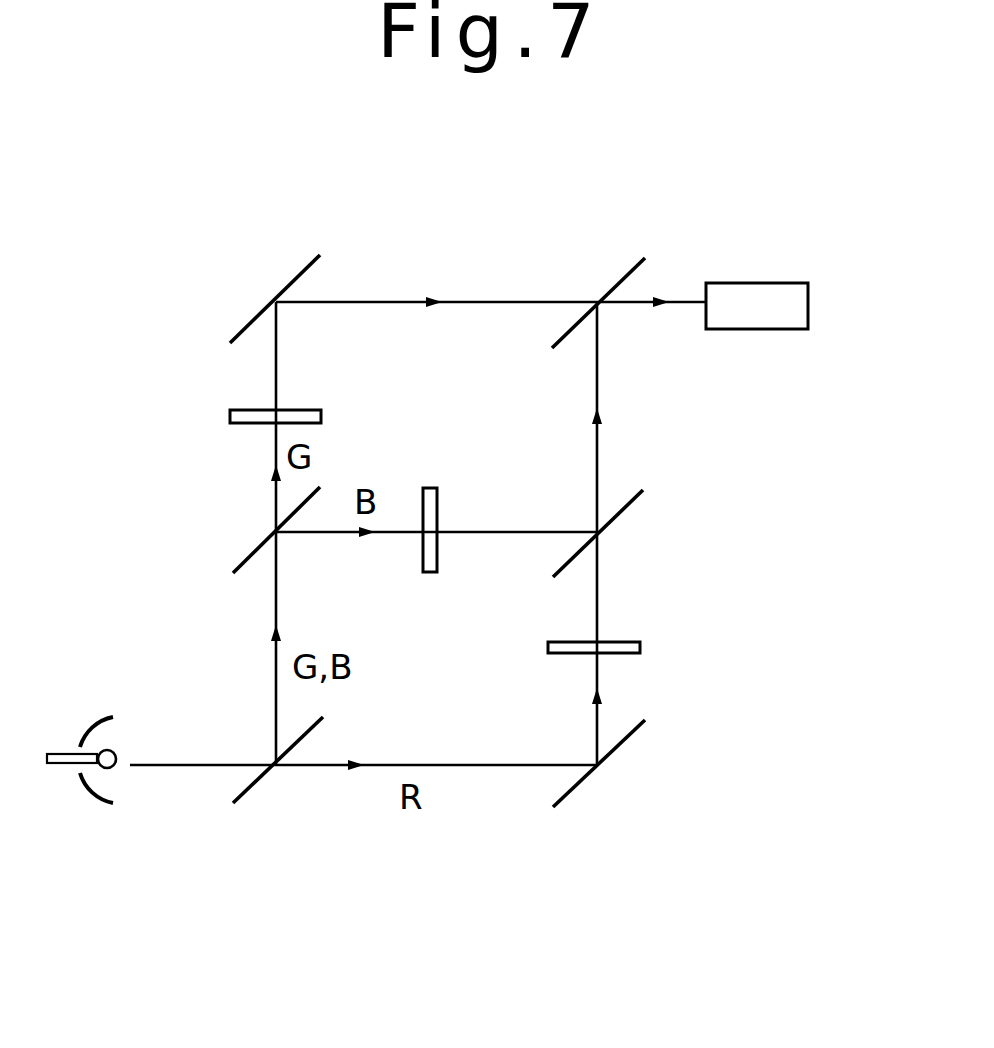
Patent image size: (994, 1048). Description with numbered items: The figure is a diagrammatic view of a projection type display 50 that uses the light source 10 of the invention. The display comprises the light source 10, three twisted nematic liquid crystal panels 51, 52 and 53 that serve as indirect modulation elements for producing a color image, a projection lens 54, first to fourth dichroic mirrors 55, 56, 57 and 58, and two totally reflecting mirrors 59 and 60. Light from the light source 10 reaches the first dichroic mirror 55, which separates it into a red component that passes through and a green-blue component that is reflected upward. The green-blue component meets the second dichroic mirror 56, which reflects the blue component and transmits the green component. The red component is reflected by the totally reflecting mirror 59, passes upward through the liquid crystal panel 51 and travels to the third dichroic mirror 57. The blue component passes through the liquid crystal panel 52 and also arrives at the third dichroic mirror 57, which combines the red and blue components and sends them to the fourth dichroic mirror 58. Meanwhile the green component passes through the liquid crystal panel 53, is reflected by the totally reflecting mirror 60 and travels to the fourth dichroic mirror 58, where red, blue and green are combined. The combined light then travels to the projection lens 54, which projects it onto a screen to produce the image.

The light source 10 is at (74, 712).
The projection type display 50 is at (716, 235).
The liquid crystal panel 51 is at (622, 642).
The liquid crystal panel 52 is at (437, 510).
The liquid crystal panel 53 is at (305, 410).
The projection lens 54 is at (783, 282).
The first dichroic mirror 55 is at (248, 790).
The second dichroic mirror 56 is at (260, 542).
The third dichroic mirror 57 is at (630, 505).
The fourth dichroic mirror 58 is at (622, 280).
The totally reflecting mirror 59 is at (560, 795).
The totally reflecting mirror 60 is at (305, 268).